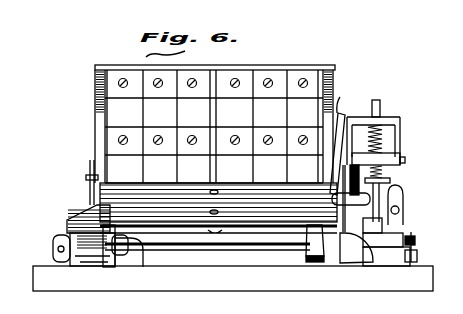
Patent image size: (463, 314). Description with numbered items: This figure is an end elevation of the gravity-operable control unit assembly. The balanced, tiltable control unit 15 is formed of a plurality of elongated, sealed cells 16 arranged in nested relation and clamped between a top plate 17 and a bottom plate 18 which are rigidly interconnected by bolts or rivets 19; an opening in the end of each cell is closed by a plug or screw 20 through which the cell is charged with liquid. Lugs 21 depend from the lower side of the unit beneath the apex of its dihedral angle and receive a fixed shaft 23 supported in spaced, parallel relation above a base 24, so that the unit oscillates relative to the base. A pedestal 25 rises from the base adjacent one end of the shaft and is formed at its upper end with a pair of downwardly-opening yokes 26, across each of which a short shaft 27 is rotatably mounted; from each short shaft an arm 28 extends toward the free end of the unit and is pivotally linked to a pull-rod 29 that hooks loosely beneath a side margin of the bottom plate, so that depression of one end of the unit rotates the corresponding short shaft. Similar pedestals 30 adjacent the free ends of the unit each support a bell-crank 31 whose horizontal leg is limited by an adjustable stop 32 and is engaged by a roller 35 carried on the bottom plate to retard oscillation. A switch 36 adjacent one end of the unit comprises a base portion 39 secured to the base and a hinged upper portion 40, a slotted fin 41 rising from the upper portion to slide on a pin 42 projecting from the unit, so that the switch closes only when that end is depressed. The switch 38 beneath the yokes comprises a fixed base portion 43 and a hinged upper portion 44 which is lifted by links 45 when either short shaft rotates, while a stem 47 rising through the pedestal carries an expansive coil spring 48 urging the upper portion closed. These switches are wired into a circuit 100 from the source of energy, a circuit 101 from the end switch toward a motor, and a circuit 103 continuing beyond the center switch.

The control unit 15 is at (137, 80).
The cells 16 is at (214, 138).
The top clamp plate 17 is at (263, 68).
The bottom clamp plate 18 is at (222, 205).
The bolts or rivets 19 is at (101, 126).
The plug or screw 20 is at (127, 137).
The lugs 21 is at (145, 262).
The shaft or axle 23 is at (211, 255).
The base 24 is at (207, 265).
The pedestal 25 is at (352, 116).
The yokes 26 is at (397, 129).
The short shaft 27 is at (393, 160).
The arm 28 is at (350, 158).
The pull-rod 29 is at (352, 102).
The pedestals 30 is at (356, 248).
The bell-crank 31 is at (351, 198).
The adjustable stop 32 is at (378, 159).
The rollers 35 is at (374, 193).
The switch 36 is at (51, 250).
The switch 38 is at (416, 242).
The base portion 39 is at (88, 258).
The upper portion 40 is at (69, 211).
The fins 41 is at (89, 190).
The pins 42 is at (86, 177).
The base portion 43 is at (400, 266).
The upper portion 44 is at (410, 232).
The links 45 is at (402, 200).
The stem 47 is at (381, 110).
The expansive coil spring 48 is at (386, 128).
The circuit 100 is at (417, 255).
The circuit 101 is at (75, 260).
The circuit 103 is at (416, 234).